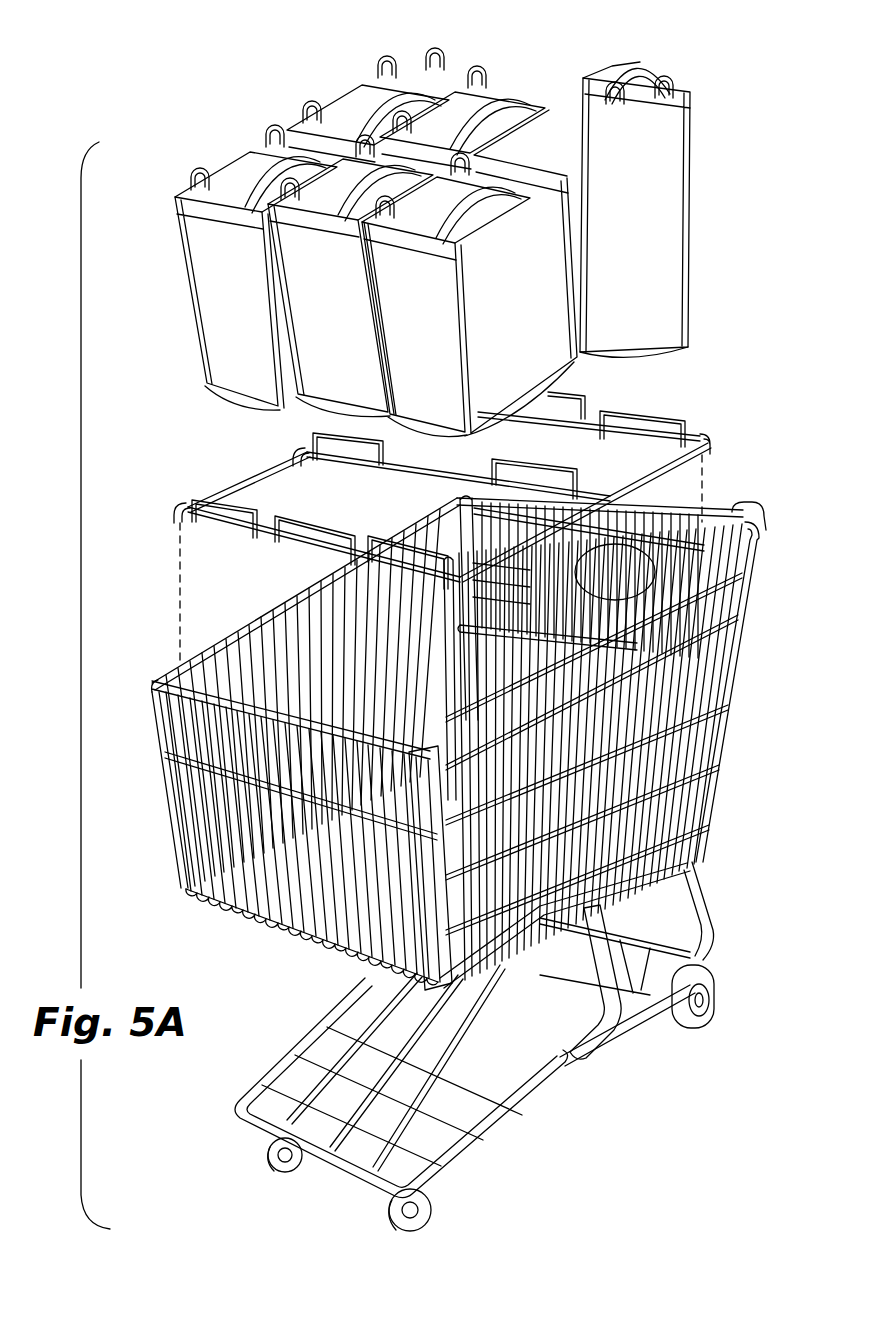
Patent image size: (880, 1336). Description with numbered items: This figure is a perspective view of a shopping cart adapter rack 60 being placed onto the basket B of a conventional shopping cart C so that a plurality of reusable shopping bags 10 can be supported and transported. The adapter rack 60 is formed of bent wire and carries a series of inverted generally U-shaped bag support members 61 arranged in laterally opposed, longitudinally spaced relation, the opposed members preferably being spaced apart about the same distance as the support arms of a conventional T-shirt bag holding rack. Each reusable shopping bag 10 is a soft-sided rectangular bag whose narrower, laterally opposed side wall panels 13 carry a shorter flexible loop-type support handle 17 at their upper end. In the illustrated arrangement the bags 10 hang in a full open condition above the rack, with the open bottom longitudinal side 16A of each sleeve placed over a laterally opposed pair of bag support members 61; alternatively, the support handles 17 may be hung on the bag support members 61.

The reusable shopping bag 10 is at (432, 239).
The side wall panel 13 is at (400, 378).
The opening along lowermost longitudinal side of sleeve 16A is at (218, 232).
The loop-type support handle 17 is at (436, 64).
The shopping cart adapter rack 60 is at (470, 515).
The bag support member 61 is at (622, 406).
The basket B is at (250, 888).
The shopping cart C is at (473, 863).